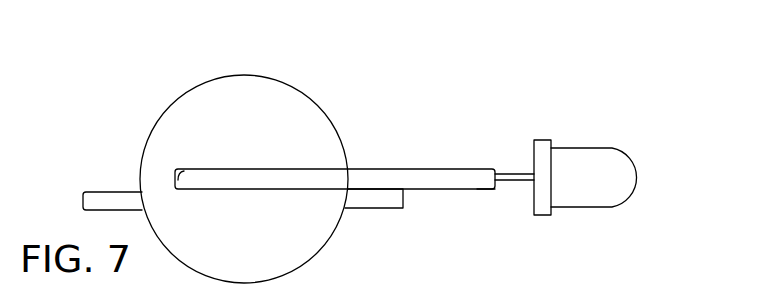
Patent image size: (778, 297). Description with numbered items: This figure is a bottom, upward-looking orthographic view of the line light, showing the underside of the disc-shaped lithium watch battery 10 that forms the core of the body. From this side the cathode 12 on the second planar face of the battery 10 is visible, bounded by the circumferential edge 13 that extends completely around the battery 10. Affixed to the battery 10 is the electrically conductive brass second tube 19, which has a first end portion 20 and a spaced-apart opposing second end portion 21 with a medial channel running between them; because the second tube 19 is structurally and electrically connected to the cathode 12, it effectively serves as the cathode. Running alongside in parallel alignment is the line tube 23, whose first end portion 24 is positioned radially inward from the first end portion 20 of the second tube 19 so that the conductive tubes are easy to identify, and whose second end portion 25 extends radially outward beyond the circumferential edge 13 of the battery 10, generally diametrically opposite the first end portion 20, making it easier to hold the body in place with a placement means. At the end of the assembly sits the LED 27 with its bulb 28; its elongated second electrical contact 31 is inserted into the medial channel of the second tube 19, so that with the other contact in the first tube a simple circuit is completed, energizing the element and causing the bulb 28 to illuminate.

The battery 10 is at (188, 92).
The cathode 12 is at (297, 236).
The circumferential edge 13 is at (283, 83).
The second tube 19 is at (264, 168).
The first end portion 20 is at (477, 188).
The second end portion 21 is at (184, 178).
The line tube 23 is at (123, 192).
The first end portion 24 is at (395, 200).
The second end portion 25 is at (87, 190).
The LED 27 is at (541, 140).
The bulb 28 is at (603, 158).
The second electrical contact 31 is at (512, 174).